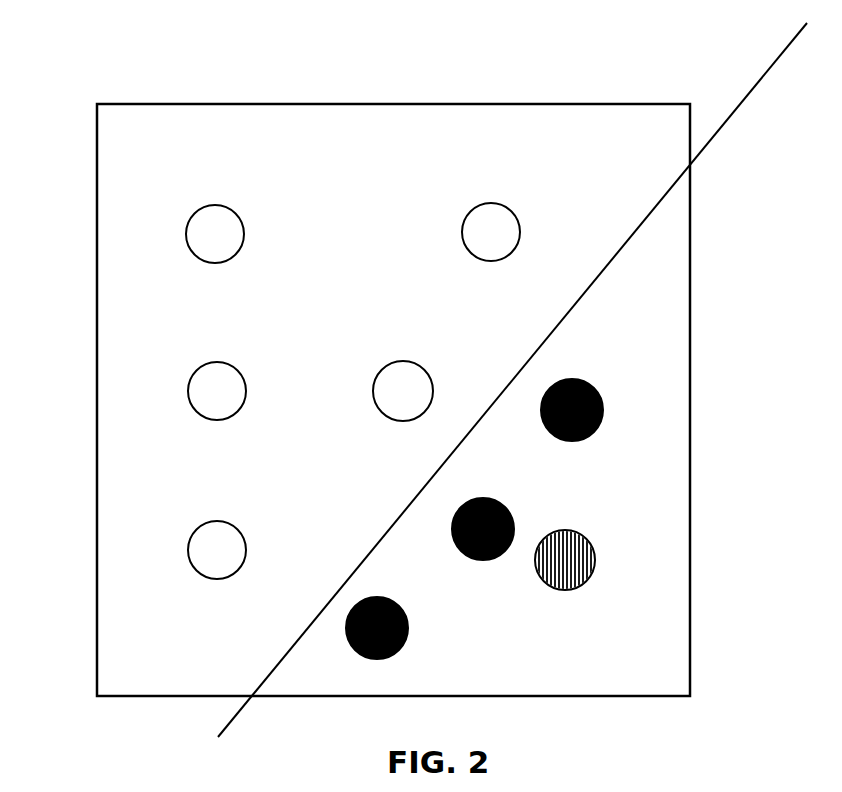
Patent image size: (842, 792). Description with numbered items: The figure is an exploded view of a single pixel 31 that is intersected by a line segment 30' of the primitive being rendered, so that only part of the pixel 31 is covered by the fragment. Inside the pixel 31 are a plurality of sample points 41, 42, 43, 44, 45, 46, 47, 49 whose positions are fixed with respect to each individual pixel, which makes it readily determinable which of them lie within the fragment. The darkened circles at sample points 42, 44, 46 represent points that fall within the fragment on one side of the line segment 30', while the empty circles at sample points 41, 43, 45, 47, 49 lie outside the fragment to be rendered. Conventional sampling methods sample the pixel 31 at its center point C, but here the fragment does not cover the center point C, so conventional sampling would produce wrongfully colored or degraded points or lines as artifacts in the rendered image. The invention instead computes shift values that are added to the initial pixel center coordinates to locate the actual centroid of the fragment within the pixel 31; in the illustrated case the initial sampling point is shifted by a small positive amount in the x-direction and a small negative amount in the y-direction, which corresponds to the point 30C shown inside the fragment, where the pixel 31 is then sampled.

The pixel 31 is at (50, 99).
The line segment 30' is at (512, 380).
The fragment centroid point 30C is at (577, 533).
The sample point 41 is at (215, 205).
The sample point 42 is at (572, 379).
The sample point 43 is at (491, 203).
The sample point 44 is at (483, 498).
The sample point 45 is at (217, 362).
The sample point 46 is at (377, 597).
The sample point 47 is at (403, 361).
The sample point 49 is at (217, 521).
The center point C is at (364, 372).